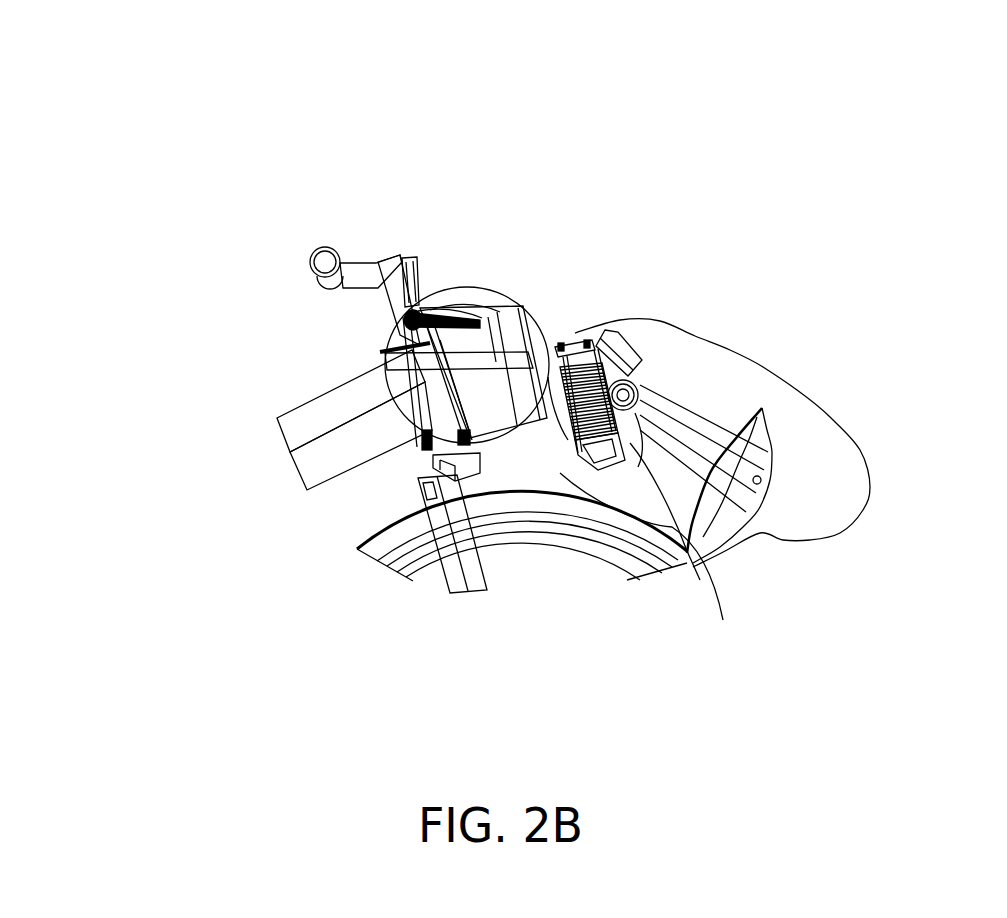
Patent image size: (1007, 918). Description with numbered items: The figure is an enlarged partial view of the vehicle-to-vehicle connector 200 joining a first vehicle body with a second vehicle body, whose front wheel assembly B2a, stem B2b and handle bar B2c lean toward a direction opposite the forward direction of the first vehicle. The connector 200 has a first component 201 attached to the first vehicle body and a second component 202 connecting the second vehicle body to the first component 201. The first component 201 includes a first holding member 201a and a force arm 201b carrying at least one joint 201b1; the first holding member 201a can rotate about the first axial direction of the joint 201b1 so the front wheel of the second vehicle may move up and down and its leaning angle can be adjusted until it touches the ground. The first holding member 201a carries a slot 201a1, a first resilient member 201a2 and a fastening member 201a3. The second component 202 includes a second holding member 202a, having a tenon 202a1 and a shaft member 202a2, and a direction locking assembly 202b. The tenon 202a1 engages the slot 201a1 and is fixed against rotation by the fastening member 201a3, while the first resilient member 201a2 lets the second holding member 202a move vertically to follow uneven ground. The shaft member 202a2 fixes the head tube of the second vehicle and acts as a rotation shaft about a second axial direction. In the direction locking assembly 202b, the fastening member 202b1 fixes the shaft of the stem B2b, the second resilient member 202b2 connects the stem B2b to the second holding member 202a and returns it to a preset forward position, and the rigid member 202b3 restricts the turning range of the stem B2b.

The vehicle-to-vehicle connector 200 is at (96, 73).
The first component 201 is at (770, 367).
The first holding member 201a is at (582, 322).
The slot 201a1 is at (687, 551).
The first resilient member 201a2 is at (740, 527).
The fastening member 201a3 is at (606, 330).
The force arm 201b is at (712, 432).
The joint 201b1 is at (640, 390).
The second component 202 is at (510, 300).
The second holding member 202a is at (545, 322).
The tenon 202a1 is at (512, 395).
The shaft member 202a2 is at (478, 395).
The direction locking assembly 202b is at (455, 313).
The fastening member 202b1 is at (395, 320).
The second resilient member 202b2 is at (403, 350).
The rigid member 202b3 is at (405, 370).
The front wheel assembly B2a is at (377, 553).
The stem B2b is at (405, 252).
The handle bar B2c is at (323, 248).